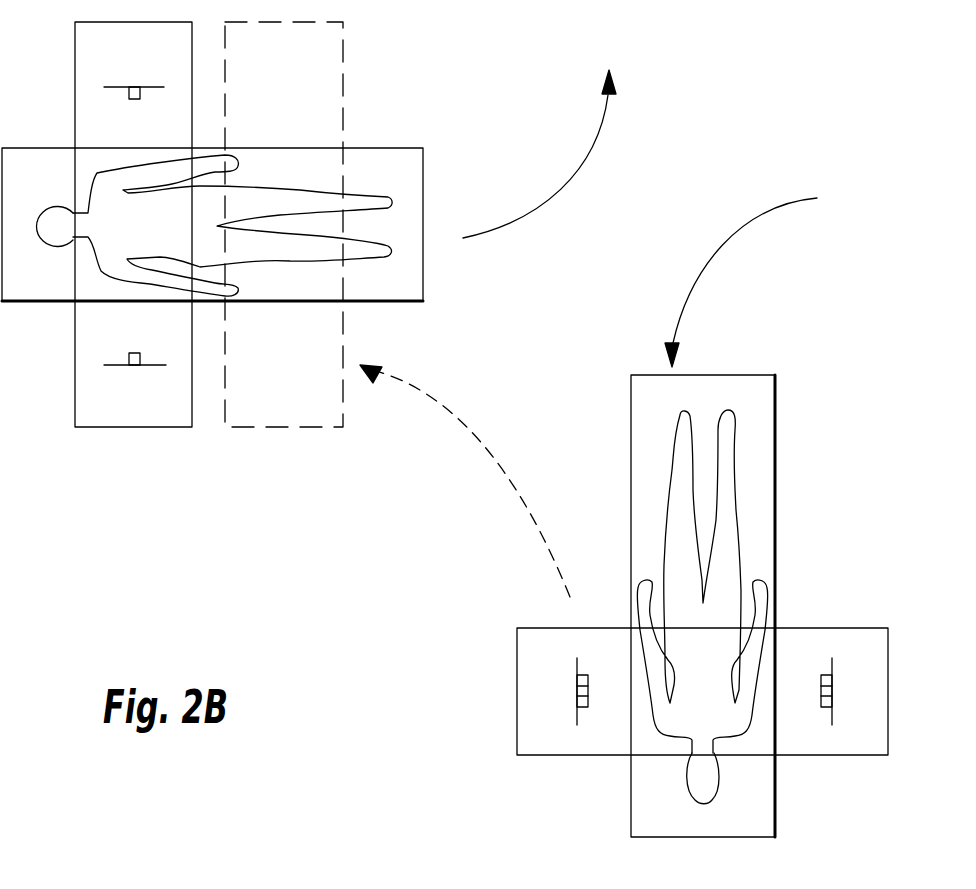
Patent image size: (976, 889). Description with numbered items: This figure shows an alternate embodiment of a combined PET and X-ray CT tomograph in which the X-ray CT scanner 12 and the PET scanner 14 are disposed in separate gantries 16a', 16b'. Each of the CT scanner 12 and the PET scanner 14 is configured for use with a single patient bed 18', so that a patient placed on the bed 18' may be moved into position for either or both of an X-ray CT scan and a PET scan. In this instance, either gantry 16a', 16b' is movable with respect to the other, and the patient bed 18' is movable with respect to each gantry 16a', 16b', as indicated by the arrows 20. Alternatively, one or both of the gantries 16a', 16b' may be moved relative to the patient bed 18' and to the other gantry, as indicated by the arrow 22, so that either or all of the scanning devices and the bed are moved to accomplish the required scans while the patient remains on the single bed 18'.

The CT scanner 12 is at (118, 363).
The PET scanner 14 is at (577, 680).
The gantry 16a' is at (112, 260).
The gantry 16b' is at (539, 388).
The patient bed 18' is at (412, 467).
The arrows 20 is at (592, 150).
The arrow 22 is at (487, 455).